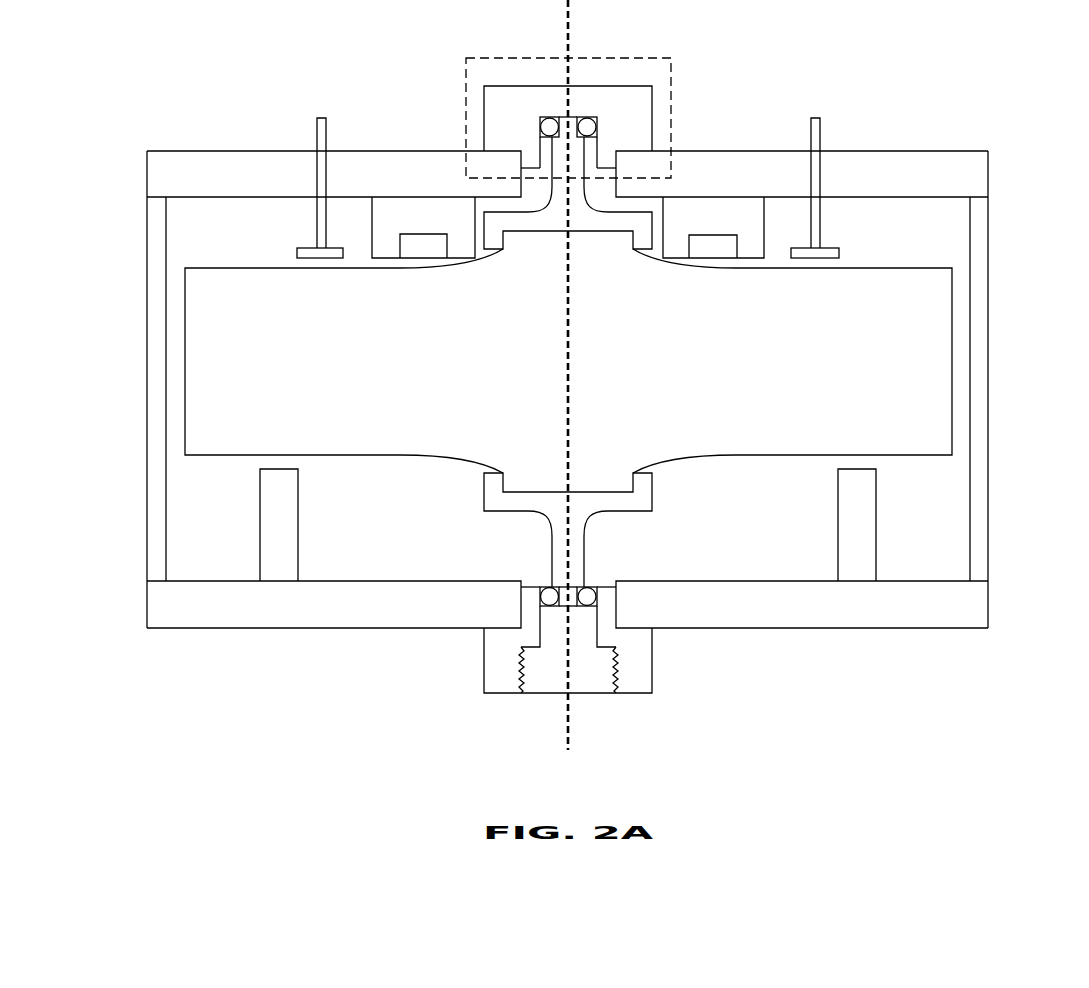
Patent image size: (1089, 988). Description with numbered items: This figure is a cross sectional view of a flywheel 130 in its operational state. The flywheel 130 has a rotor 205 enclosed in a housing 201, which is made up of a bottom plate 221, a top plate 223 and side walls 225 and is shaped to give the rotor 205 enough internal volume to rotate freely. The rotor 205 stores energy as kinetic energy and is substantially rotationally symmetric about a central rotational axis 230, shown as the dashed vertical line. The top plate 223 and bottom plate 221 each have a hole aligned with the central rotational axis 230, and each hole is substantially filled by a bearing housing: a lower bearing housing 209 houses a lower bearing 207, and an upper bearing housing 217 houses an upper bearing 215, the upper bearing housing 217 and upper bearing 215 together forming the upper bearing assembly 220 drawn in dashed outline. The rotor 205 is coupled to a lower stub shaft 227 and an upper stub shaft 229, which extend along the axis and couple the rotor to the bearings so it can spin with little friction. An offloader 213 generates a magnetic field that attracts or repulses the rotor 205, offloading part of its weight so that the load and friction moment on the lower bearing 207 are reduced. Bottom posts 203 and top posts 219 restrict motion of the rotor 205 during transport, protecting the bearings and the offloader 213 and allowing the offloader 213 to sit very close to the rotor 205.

The flywheel 130 is at (203, 38).
The housing 201 is at (577, 374).
The bottom posts 203 is at (298, 507).
The rotor 205 is at (952, 385).
The lower bearing 207 is at (592, 598).
The lower bearing housing 209 is at (652, 666).
The offloader 213 is at (725, 208).
The upper bearing 215 is at (540, 128).
The upper bearing housing 217 is at (652, 122).
The top posts 219 is at (317, 226).
The upper bearing assembly 220 is at (671, 78).
The bottom plate 221 is at (988, 606).
The top plate 223 is at (988, 169).
The side walls 225 is at (988, 283).
The lower stub shaft 227 is at (585, 560).
The upper stub shaft 229 is at (632, 212).
The central rotational axis 230 is at (569, 33).